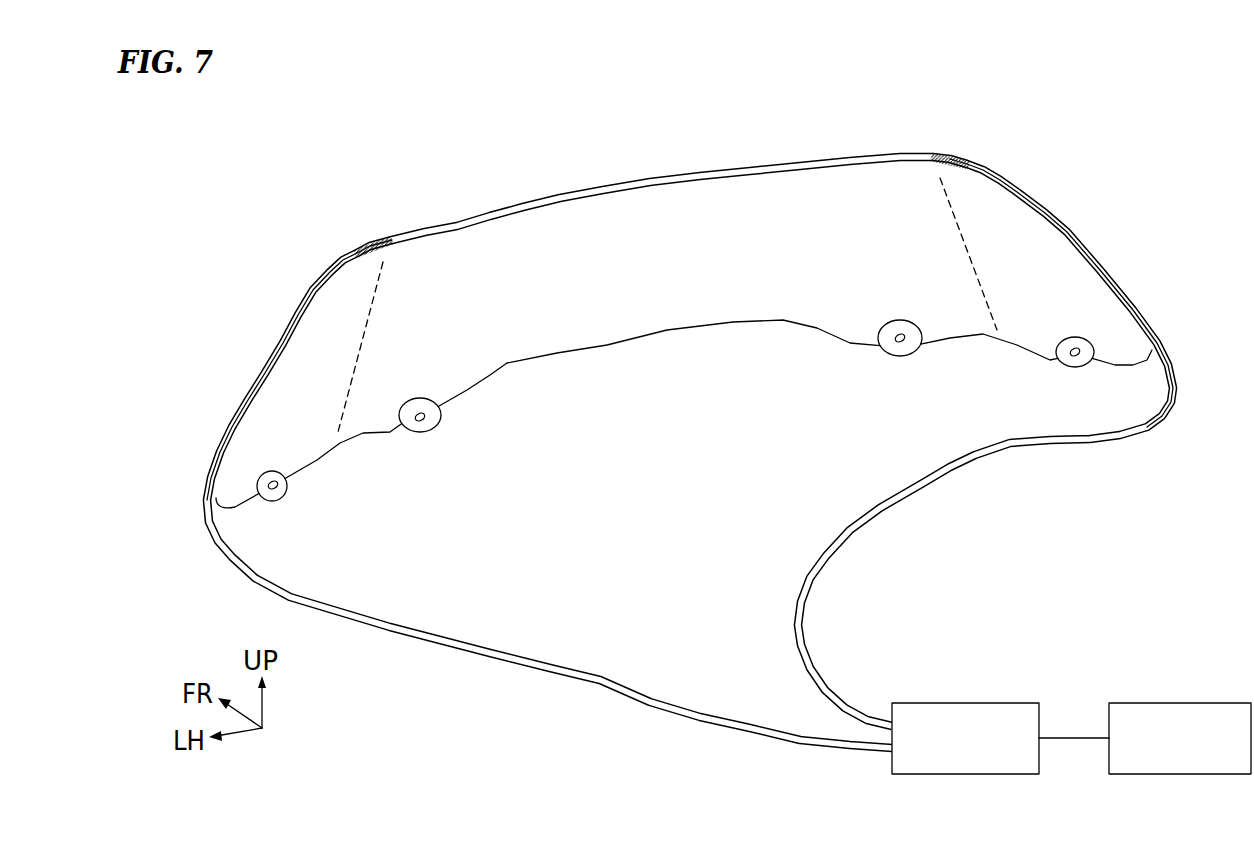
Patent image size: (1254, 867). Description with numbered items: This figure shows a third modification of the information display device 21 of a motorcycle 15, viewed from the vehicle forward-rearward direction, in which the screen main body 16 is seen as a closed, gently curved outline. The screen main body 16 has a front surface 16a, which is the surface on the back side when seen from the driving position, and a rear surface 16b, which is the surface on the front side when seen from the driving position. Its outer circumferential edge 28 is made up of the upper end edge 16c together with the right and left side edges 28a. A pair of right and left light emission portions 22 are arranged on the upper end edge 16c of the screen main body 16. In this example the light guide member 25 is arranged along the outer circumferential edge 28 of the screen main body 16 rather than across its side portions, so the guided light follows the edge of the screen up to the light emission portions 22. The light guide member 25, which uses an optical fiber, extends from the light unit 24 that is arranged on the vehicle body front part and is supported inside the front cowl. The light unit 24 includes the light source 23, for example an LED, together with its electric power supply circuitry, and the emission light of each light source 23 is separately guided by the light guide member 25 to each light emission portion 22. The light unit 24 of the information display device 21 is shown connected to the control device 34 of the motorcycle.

The vehicle lamp 15 is at (864, 77).
The screen main body 16 is at (815, 152).
The front surface 16a is at (518, 240).
The rear surface 16b is at (592, 228).
The upper end edge 16c is at (676, 172).
The information display device 21 is at (697, 256).
The light emission portion 22 is at (380, 243).
The light source 23 is at (982, 702).
The light unit 24 is at (1029, 659).
The light guide member 25 is at (923, 483).
The outer circumferential edge 28 is at (682, 200).
The side edge 28a is at (257, 378).
The control device 34 is at (1205, 702).